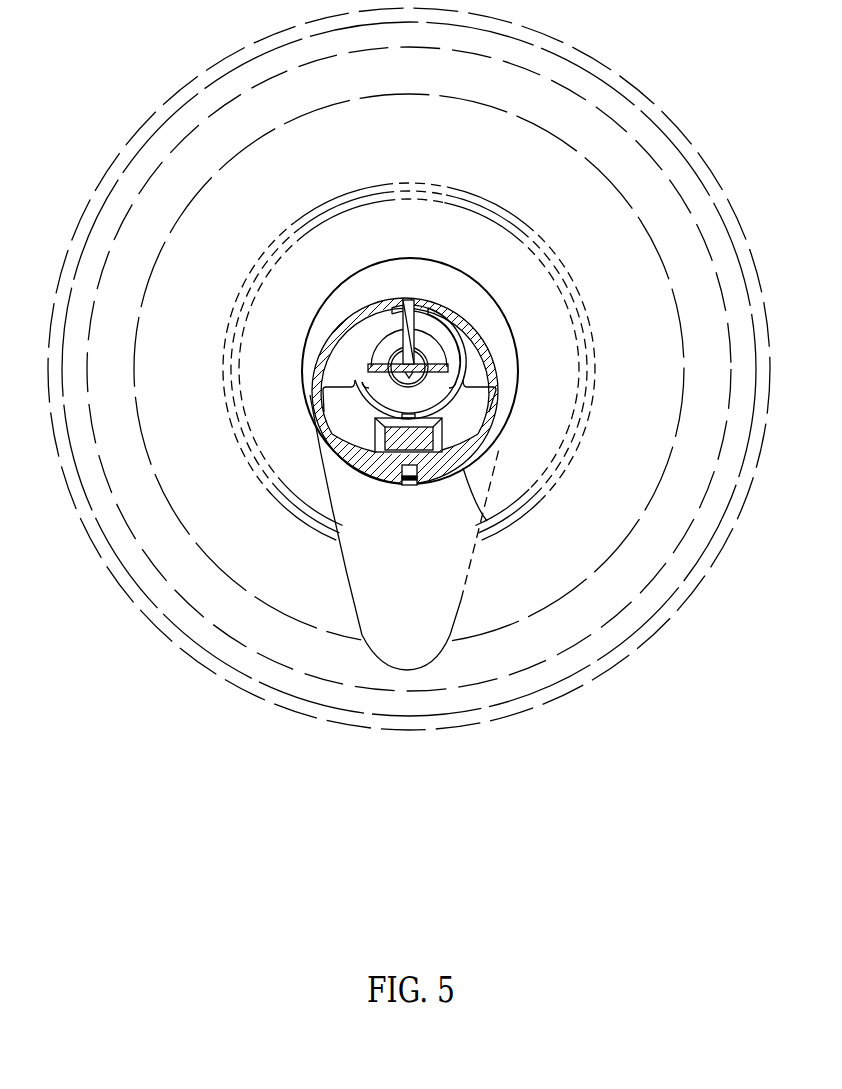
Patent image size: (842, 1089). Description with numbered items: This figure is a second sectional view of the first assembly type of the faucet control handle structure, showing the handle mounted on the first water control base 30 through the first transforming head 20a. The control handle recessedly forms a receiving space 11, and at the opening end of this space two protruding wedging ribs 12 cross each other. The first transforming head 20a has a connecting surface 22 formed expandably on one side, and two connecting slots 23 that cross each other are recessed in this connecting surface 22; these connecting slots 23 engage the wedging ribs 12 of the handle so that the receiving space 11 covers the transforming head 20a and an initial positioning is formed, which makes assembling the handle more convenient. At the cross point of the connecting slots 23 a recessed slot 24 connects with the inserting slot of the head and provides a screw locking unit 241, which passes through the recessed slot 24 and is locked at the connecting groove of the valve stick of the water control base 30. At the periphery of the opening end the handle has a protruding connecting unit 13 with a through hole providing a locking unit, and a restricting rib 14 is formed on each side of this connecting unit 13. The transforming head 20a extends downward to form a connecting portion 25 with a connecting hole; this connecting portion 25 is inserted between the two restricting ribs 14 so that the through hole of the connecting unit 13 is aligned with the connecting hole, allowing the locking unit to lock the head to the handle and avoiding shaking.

The first water control base 30 is at (348, 202).
The receiving space 11 is at (333, 370).
The wedging ribs 12 is at (296, 342).
The connecting slots 23 is at (400, 357).
The recessed slot 24 is at (541, 339).
The screw locking unit 241 is at (413, 358).
The first transforming head 20a is at (503, 394).
The connecting surface 22 is at (459, 413).
The connecting portion 25 is at (375, 485).
The connecting unit 13 is at (487, 521).
The restricting ribs 14 is at (322, 452).